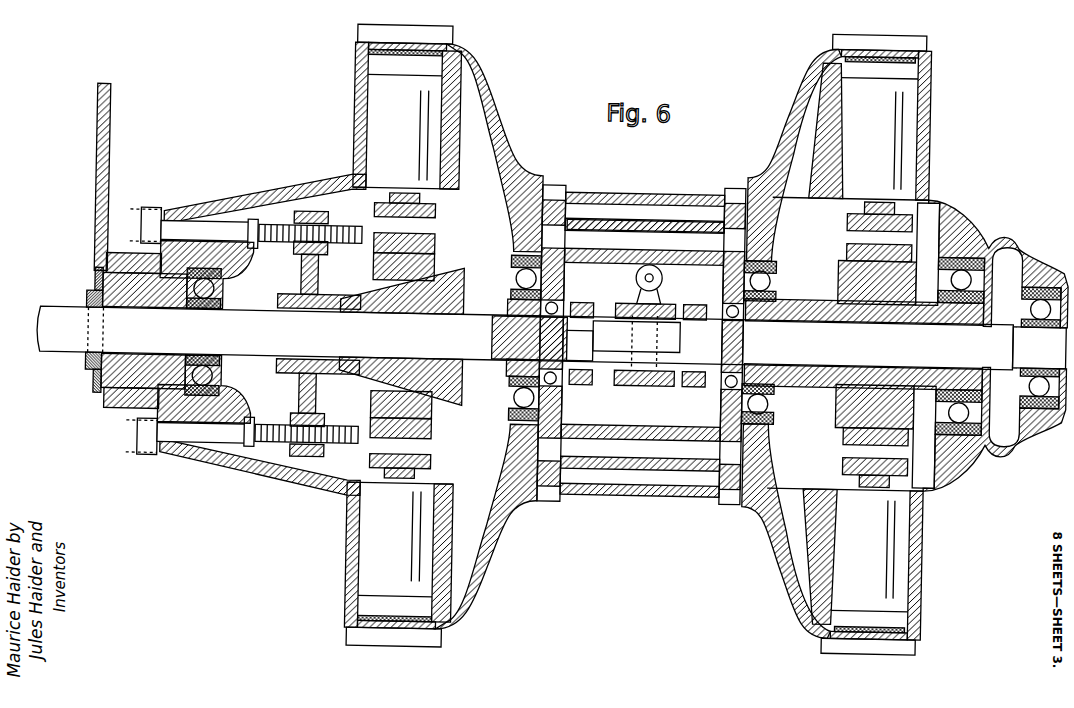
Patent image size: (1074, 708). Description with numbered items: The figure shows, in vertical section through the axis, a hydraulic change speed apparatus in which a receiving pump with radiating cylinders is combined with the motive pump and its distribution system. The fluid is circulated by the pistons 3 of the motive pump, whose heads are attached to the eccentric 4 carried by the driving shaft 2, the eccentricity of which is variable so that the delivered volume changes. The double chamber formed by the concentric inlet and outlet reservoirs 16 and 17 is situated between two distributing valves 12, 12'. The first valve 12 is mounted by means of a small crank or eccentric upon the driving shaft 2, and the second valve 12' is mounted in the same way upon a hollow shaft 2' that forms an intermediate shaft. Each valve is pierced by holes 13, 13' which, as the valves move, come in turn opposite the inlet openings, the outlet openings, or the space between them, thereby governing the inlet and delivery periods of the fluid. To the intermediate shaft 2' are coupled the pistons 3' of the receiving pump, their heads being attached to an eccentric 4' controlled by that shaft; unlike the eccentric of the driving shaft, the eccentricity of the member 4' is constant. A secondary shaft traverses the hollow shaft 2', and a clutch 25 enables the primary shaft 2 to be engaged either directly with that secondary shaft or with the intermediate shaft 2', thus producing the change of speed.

The driving shaft 2 is at (551, 355).
The pistons 3 is at (428, 137).
The eccentric 4 is at (371, 253).
The distributing valve 12 is at (570, 335).
The holes 13 is at (640, 310).
The inlet reservoir 16 is at (627, 212).
The outlet reservoir 17 is at (650, 243).
The second distributing valve 12' is at (742, 320).
The holes of the second valve 13' is at (677, 232).
The hollow shaft 2' is at (864, 294).
The pistons of the receiving pump 3' is at (850, 285).
The eccentric 4' is at (919, 251).
The clutch 25 is at (622, 384).